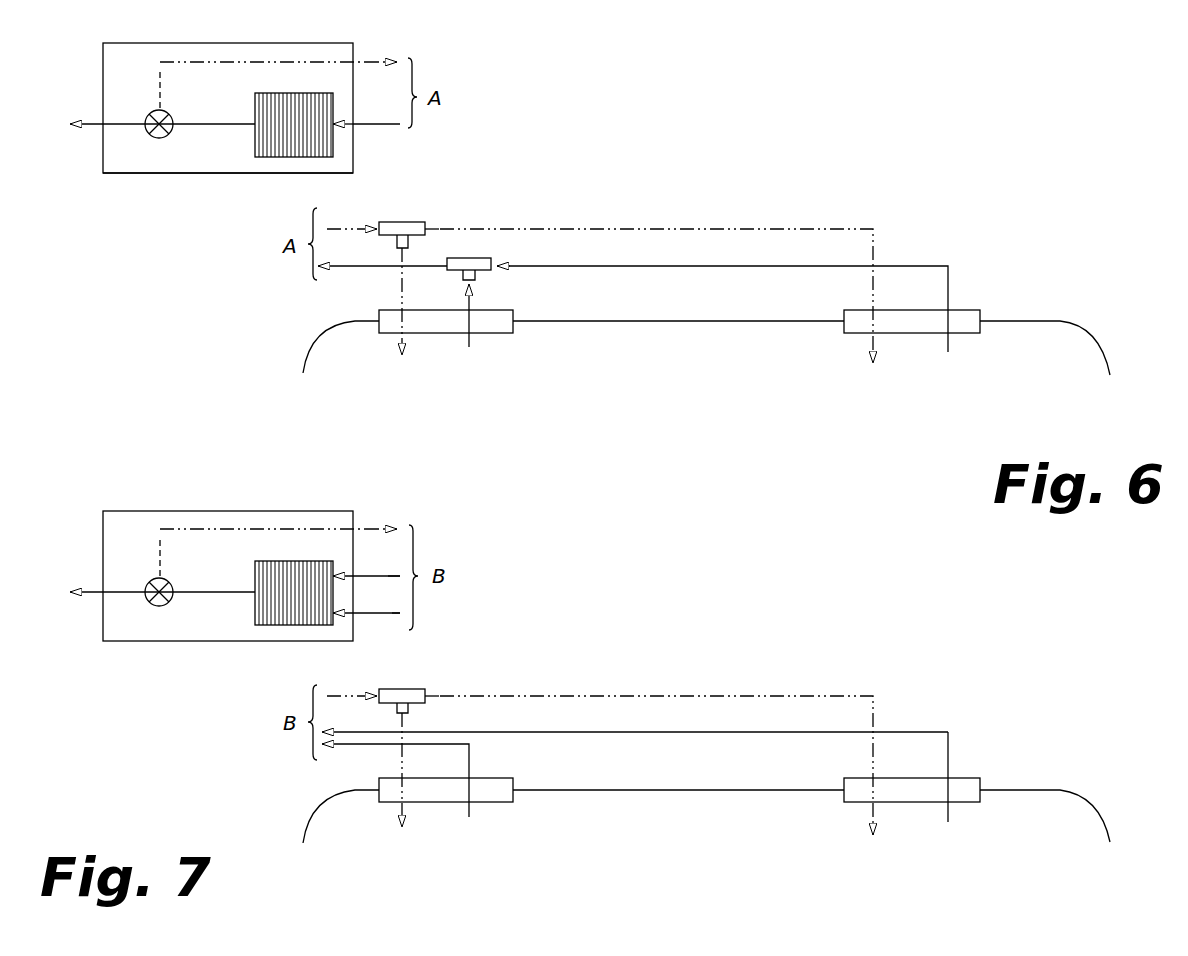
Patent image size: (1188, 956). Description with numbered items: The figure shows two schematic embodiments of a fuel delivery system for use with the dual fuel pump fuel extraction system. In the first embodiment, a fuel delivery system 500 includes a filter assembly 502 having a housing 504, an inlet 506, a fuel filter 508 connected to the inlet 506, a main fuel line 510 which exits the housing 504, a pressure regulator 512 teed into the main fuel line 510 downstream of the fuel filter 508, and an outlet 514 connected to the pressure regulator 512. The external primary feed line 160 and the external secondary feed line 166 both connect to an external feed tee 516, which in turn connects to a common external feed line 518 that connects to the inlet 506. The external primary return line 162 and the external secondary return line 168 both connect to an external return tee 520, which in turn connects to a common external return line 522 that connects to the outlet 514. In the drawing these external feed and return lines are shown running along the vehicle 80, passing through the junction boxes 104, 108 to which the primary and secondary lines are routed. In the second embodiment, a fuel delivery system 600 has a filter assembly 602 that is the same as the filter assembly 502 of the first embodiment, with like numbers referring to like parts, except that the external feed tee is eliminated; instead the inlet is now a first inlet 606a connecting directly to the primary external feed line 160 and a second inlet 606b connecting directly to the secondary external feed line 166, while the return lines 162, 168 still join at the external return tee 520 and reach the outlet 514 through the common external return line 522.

In FIG. 6, the vehicle 80 is at (1110, 335).
In FIG. 7, the vehicle 80 is at (1110, 815).
In FIG. 6, the first junction box 104 is at (510, 333).
In FIG. 7, the first junction box 104 is at (497, 802).
In FIG. 6, the second junction box 108 is at (857, 333).
In FIG. 7, the second junction box 108 is at (850, 802).
In FIG. 6, the external primary feed line 160 is at (473, 302).
In FIG. 7, the external primary feed line 160 is at (392, 615).
In FIG. 6, the external primary return line 162 is at (398, 288).
In FIG. 7, the external primary return line 162 is at (397, 762).
In FIG. 6, the external secondary feed line 166 is at (782, 266).
In FIG. 7, the external secondary feed line 166 is at (388, 576).
In FIG. 6, the external secondary return line 168 is at (833, 229).
In FIG. 7, the external secondary return line 168 is at (833, 697).
In FIG. 6, the fuel delivery system 500 is at (462, 158).
In FIG. 6, the filter assembly 502 is at (99, 84).
In FIG. 6, the housing 504 is at (222, 175).
In FIG. 6, the inlet 506 is at (355, 126).
In FIG. 6, the fuel filter 508 is at (281, 148).
In FIG. 7, the fuel filter 508 is at (262, 615).
In FIG. 6, the main fuel line 510 is at (120, 120).
In FIG. 7, the main fuel line 510 is at (120, 592).
In FIG. 6, the pressure regulator 512 is at (157, 140).
In FIG. 7, the pressure regulator 512 is at (163, 606).
In FIG. 6, the outlet 514 is at (355, 62).
In FIG. 7, the outlet 514 is at (355, 529).
In FIG. 6, the external feed tee 516 is at (473, 258).
In FIG. 6, the common external feed line 518 is at (386, 126).
In FIG. 6, the external return tee 520 is at (408, 222).
In FIG. 7, the external return tee 520 is at (415, 689).
In FIG. 6, the common external return line 522 is at (374, 62).
In FIG. 7, the common external return line 522 is at (375, 527).
In FIG. 7, the fuel delivery system 600 is at (500, 620).
In FIG. 7, the filter assembly 602 is at (206, 496).
In FIG. 7, the first inlet 606a is at (360, 616).
In FIG. 7, the second inlet 606b is at (353, 582).